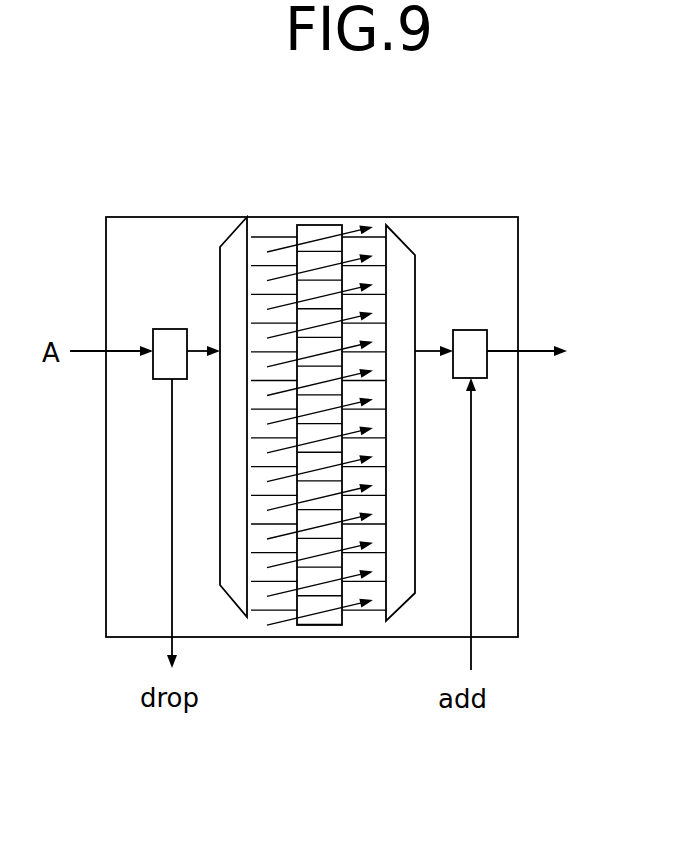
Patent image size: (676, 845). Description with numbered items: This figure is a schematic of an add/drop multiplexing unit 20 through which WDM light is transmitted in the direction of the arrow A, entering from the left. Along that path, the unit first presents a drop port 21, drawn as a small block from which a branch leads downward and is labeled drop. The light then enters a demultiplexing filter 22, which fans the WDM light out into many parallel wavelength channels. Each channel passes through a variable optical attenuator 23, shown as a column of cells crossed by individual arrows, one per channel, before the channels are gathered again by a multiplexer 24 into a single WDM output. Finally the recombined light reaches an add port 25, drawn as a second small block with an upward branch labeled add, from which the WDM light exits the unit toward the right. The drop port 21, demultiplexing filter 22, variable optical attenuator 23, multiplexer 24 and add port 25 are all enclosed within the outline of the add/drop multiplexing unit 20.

The add/drop multiplexing unit 20 is at (466, 217).
The drop port 21 is at (152, 345).
The demultiplexing filter 22 is at (226, 240).
The variable optical attenuator 23 is at (320, 225).
The multiplexer 24 is at (400, 233).
The add port 25 is at (487, 342).